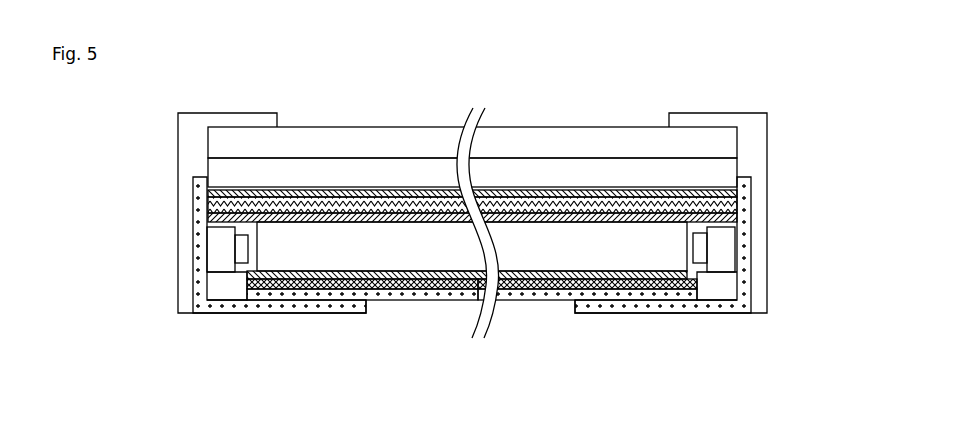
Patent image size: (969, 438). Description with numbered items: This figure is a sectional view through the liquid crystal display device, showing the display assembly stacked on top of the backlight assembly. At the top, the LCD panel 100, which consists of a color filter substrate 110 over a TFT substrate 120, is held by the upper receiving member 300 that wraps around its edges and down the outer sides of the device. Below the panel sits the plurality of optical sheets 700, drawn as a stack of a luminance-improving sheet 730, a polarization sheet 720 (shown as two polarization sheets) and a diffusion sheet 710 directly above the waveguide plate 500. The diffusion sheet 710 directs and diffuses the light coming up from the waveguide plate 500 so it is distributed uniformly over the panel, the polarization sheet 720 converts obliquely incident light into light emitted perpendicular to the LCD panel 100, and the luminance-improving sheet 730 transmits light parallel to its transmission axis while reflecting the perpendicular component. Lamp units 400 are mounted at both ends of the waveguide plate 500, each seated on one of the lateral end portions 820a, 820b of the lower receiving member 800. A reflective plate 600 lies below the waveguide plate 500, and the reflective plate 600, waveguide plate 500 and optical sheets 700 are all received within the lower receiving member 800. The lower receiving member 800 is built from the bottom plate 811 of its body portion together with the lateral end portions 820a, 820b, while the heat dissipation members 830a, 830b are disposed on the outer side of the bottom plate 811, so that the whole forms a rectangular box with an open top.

The LCD panel 100 is at (408, 157).
The color filter substrate 110 is at (225, 143).
The TFT substrate 120 is at (225, 169).
The upper receiving member 300 is at (757, 135).
The lamp units 400 is at (725, 248).
The waveguide plate 500 is at (270, 256).
The reflective plate 600 is at (237, 272).
The optical sheets 700 is at (402, 219).
The diffusion sheet 710 is at (210, 219).
The polarization sheet 720 is at (210, 206).
The luminance-improving sheet 730 is at (210, 192).
The lower receiving member 800 is at (472, 296).
The bottom plate 811 is at (436, 301).
The lateral end portion 820a is at (614, 278).
The lateral end portion 820b is at (317, 307).
The heat dissipation member 830a is at (533, 300).
The heat dissipation member 830b is at (377, 301).